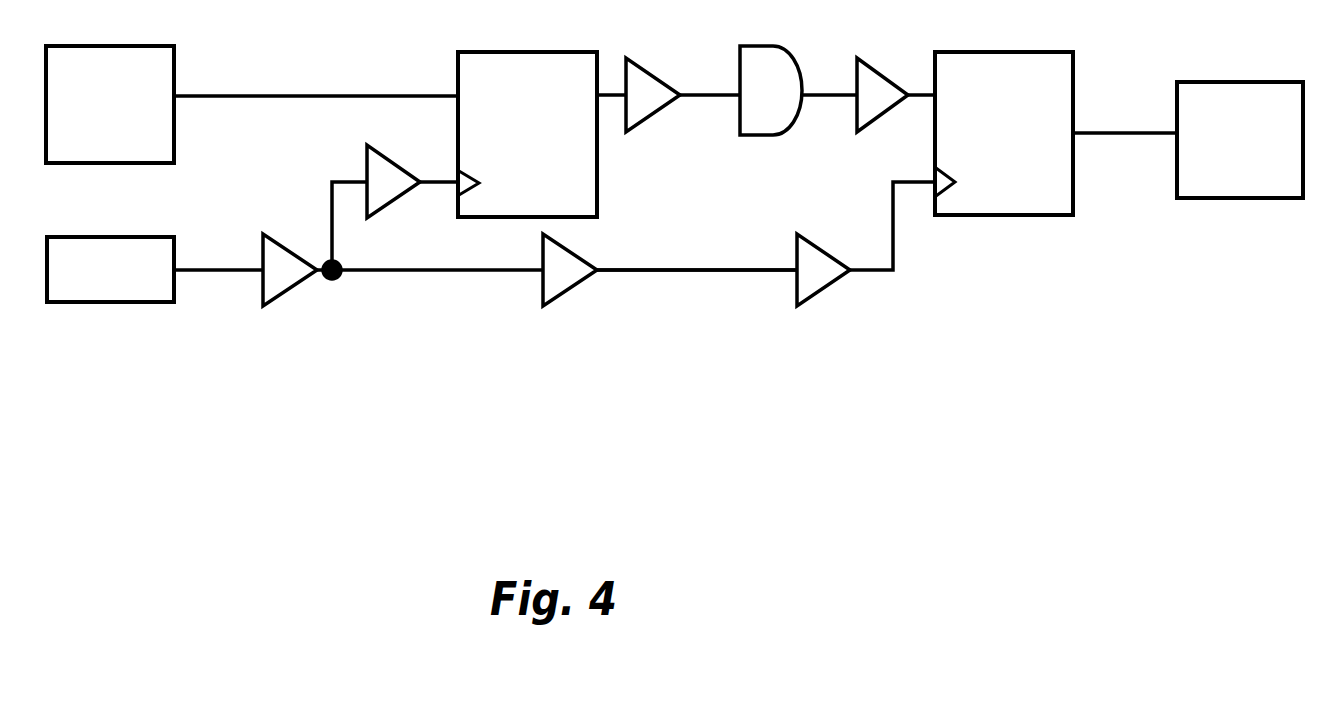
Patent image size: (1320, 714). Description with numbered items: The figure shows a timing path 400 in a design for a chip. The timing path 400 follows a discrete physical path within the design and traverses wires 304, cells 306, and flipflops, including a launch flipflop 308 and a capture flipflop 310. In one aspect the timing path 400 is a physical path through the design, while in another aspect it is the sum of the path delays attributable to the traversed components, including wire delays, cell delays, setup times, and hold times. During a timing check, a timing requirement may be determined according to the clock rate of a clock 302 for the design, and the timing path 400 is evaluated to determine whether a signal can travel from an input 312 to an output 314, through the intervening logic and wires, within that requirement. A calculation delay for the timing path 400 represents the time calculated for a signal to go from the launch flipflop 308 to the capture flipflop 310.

The clock 302 is at (115, 302).
The wires 304 is at (713, 273).
The cells 306 is at (542, 298).
The launch flipflop 308 is at (501, 135).
The capture flipflop 310 is at (977, 135).
The input 312 is at (86, 123).
The output 314 is at (1216, 160).
The timing path 400 is at (674, 234).